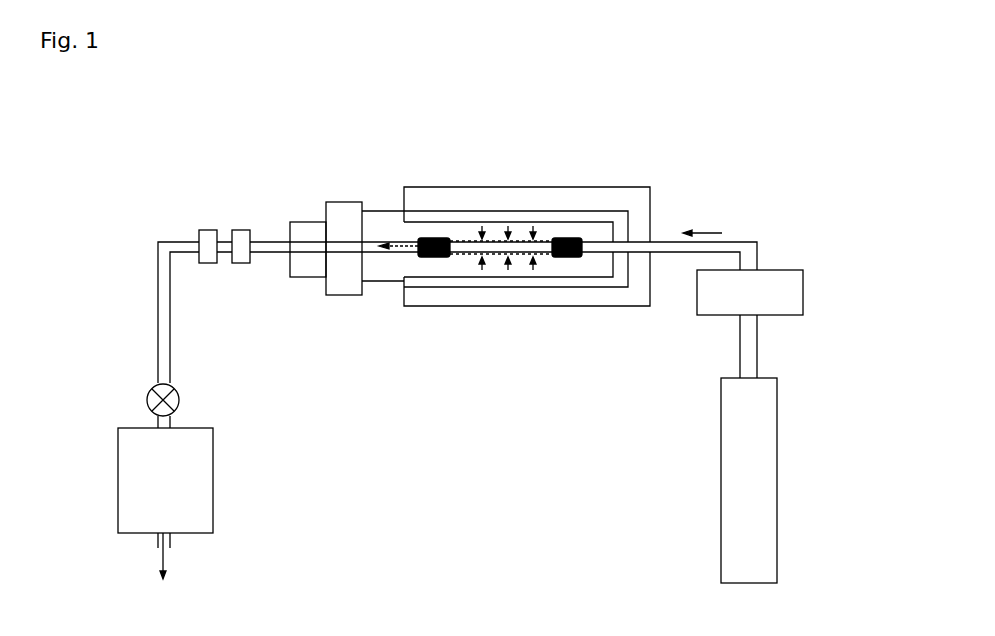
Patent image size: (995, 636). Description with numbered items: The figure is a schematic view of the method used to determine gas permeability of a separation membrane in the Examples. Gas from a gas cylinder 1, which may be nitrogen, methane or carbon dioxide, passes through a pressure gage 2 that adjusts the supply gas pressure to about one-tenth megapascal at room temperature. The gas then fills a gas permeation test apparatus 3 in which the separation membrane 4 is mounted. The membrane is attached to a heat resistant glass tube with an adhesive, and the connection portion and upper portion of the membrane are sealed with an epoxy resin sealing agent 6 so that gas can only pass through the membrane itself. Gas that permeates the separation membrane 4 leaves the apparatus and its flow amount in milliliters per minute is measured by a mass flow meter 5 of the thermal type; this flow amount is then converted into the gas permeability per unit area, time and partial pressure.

The gas cylinder 1 is at (765, 457).
The pressure gage 2 is at (795, 280).
The gas permeation test apparatus 3 is at (380, 303).
The separation membrane 4 is at (523, 242).
The mass flow meter 5 is at (197, 492).
The sealing agent 6 is at (570, 242).